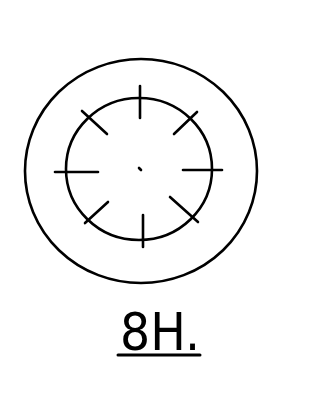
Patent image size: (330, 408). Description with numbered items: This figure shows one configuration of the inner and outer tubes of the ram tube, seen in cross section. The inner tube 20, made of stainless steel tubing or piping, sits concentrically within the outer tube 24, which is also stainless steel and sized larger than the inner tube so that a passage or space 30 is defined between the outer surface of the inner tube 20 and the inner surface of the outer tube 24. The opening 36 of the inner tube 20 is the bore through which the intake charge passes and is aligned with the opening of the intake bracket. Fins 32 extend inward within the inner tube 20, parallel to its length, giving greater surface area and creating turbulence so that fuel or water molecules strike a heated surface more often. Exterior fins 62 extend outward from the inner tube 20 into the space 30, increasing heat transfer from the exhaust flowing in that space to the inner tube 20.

The inner tube 20 is at (114, 102).
The outer tube 24 is at (152, 172).
The space 30 is at (77, 240).
The fins 32 is at (186, 70).
The opening 36 is at (140, 165).
The exterior fins 62 is at (237, 114).